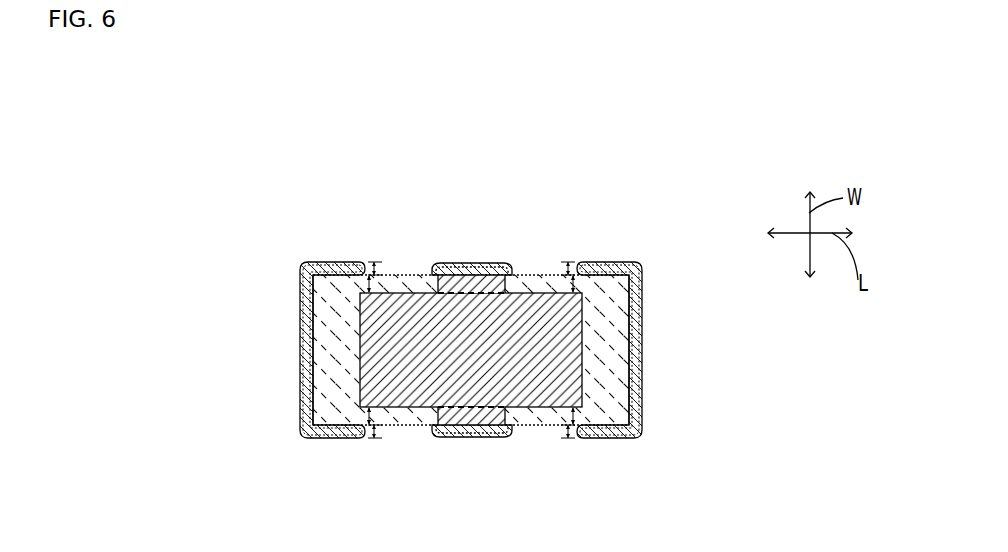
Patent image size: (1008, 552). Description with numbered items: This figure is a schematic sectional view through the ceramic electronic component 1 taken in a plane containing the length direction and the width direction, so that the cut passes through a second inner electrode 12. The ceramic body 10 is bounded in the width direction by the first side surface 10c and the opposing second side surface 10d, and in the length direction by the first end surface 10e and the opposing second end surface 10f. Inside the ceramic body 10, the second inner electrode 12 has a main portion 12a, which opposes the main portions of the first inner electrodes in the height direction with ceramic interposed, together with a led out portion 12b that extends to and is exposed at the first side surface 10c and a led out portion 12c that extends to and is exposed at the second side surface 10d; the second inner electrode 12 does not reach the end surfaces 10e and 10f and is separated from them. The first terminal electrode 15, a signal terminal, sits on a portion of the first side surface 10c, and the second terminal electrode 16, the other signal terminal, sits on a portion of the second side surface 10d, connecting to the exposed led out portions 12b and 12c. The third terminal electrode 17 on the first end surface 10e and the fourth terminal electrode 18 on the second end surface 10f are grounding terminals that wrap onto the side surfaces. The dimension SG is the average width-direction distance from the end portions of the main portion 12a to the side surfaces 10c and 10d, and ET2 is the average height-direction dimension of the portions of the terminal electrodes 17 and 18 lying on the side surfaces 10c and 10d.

The electronic component 1 is at (598, 158).
The ceramic body 10 is at (473, 349).
The first side surface 10c is at (388, 426).
The second side surface 10d is at (383, 275).
The first end surface 10e is at (305, 402).
The second end surface 10f is at (639, 403).
The second inner electrode 12 is at (524, 410).
The main portion 12a is at (558, 340).
The led out portion 12b is at (462, 410).
The led out portion 12c is at (479, 287).
The first terminal electrode 15 is at (451, 256).
The second terminal electrode 16 is at (472, 446).
The third terminal electrode 17 is at (291, 339).
The fourth terminal electrode 18 is at (652, 311).
The terminal electrode side-surface thickness ET2 is at (373, 262).
The side gap SG is at (366, 283).